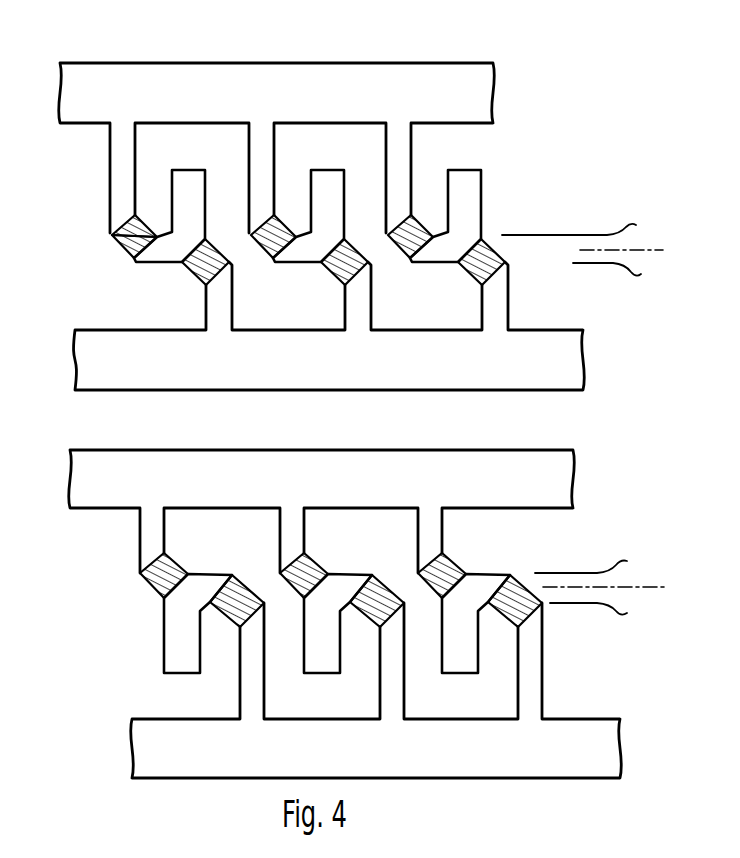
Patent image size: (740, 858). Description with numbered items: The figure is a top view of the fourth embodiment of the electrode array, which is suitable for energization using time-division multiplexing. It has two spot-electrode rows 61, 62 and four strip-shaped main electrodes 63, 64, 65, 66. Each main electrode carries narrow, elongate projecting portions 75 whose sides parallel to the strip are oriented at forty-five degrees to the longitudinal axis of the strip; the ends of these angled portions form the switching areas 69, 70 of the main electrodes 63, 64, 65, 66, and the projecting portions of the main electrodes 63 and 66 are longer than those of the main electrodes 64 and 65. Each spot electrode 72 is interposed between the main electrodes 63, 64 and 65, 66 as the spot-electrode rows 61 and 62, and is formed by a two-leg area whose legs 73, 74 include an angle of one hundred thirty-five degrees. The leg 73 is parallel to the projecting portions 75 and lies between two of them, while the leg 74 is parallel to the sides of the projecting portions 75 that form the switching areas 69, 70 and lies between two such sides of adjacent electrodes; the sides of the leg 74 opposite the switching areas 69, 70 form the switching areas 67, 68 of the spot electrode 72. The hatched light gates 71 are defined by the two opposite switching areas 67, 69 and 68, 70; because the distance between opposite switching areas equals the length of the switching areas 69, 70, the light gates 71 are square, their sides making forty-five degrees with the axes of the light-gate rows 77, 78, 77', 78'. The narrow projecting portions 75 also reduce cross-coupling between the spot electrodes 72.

The spot-electrode row 61 is at (672, 250).
The spot-electrode row 62 is at (655, 586).
The main electrode 63 is at (485, 93).
The main electrode 64 is at (572, 353).
The main electrode 65 is at (565, 473).
The main electrode 66 is at (607, 752).
The switching area 67 is at (147, 257).
The switching area 68 is at (497, 262).
The switching area 69 is at (262, 225).
The switching area 70 is at (354, 274).
The light gate 71 is at (262, 248).
The spot electrode 72 is at (335, 215).
The leg 73 is at (325, 195).
The leg 74 is at (303, 240).
The projecting portion 75 is at (260, 163).
The light-gate row 77 is at (583, 220).
The light-gate row 78 is at (619, 275).
The light-gate row 77' is at (600, 560).
The light-gate row 78' is at (606, 616).